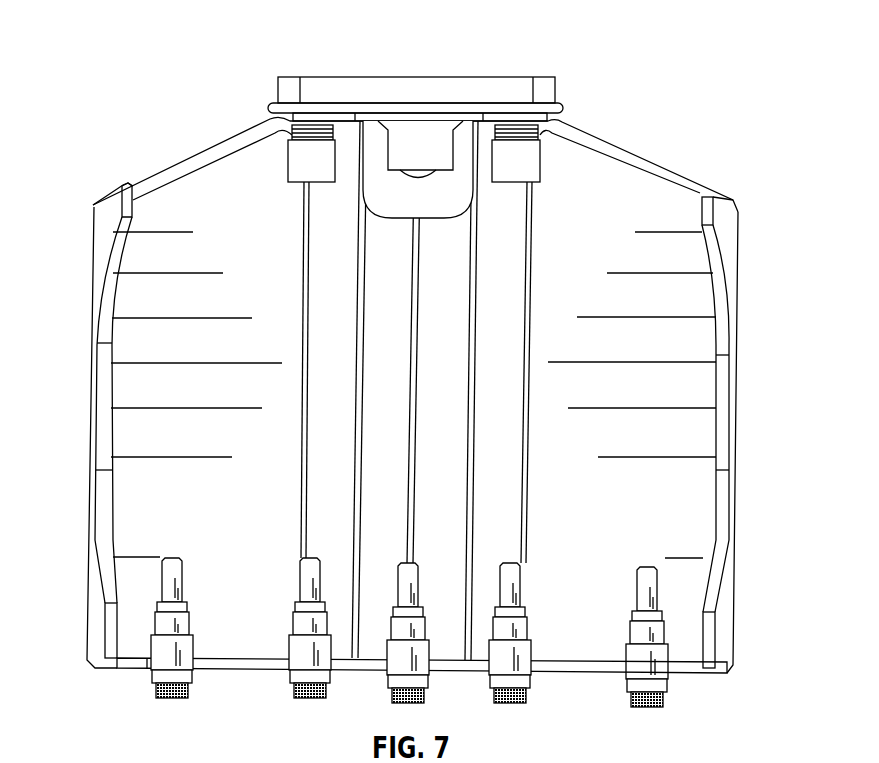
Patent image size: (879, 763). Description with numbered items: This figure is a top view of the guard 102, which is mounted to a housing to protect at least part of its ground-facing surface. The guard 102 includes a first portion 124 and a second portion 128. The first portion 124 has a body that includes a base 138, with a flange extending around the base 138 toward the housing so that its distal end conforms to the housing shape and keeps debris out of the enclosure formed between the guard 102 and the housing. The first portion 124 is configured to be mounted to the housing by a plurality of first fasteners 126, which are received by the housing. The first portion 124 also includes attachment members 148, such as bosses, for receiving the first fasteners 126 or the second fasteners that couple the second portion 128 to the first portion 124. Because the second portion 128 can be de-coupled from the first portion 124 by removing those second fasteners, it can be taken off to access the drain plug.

The guard 102 is at (106, 68).
The first portion 124 is at (680, 490).
The first fastener 126 is at (642, 707).
The second portion 128 is at (406, 86).
The base 138 is at (633, 215).
The attachment member 148 is at (520, 172).